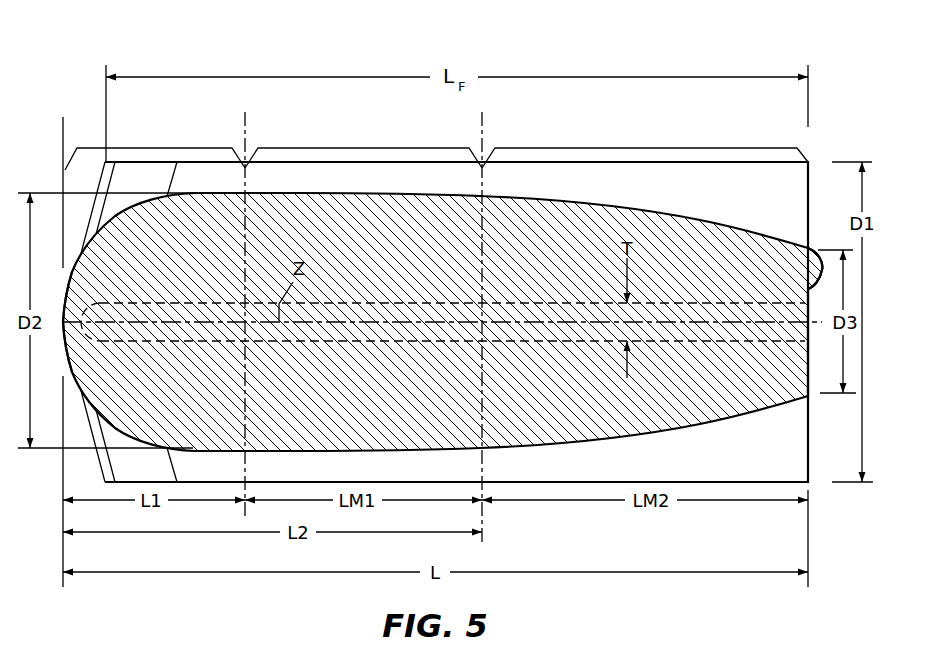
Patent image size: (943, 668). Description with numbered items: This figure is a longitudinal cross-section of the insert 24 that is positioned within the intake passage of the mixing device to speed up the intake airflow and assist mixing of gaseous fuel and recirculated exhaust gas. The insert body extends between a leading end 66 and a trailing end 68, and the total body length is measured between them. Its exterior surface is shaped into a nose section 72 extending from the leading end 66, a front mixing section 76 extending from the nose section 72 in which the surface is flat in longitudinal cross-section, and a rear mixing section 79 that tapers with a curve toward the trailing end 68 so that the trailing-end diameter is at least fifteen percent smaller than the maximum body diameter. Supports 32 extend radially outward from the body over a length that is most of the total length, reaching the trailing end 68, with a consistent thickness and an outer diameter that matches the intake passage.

The insert 24 is at (717, 126).
The supports 32 is at (698, 200).
The leading end 66 is at (64, 299).
The trailing end 68 is at (821, 260).
The nose section 72 is at (155, 142).
The mixing section 76 is at (363, 141).
The rear mixing section 79 is at (645, 141).